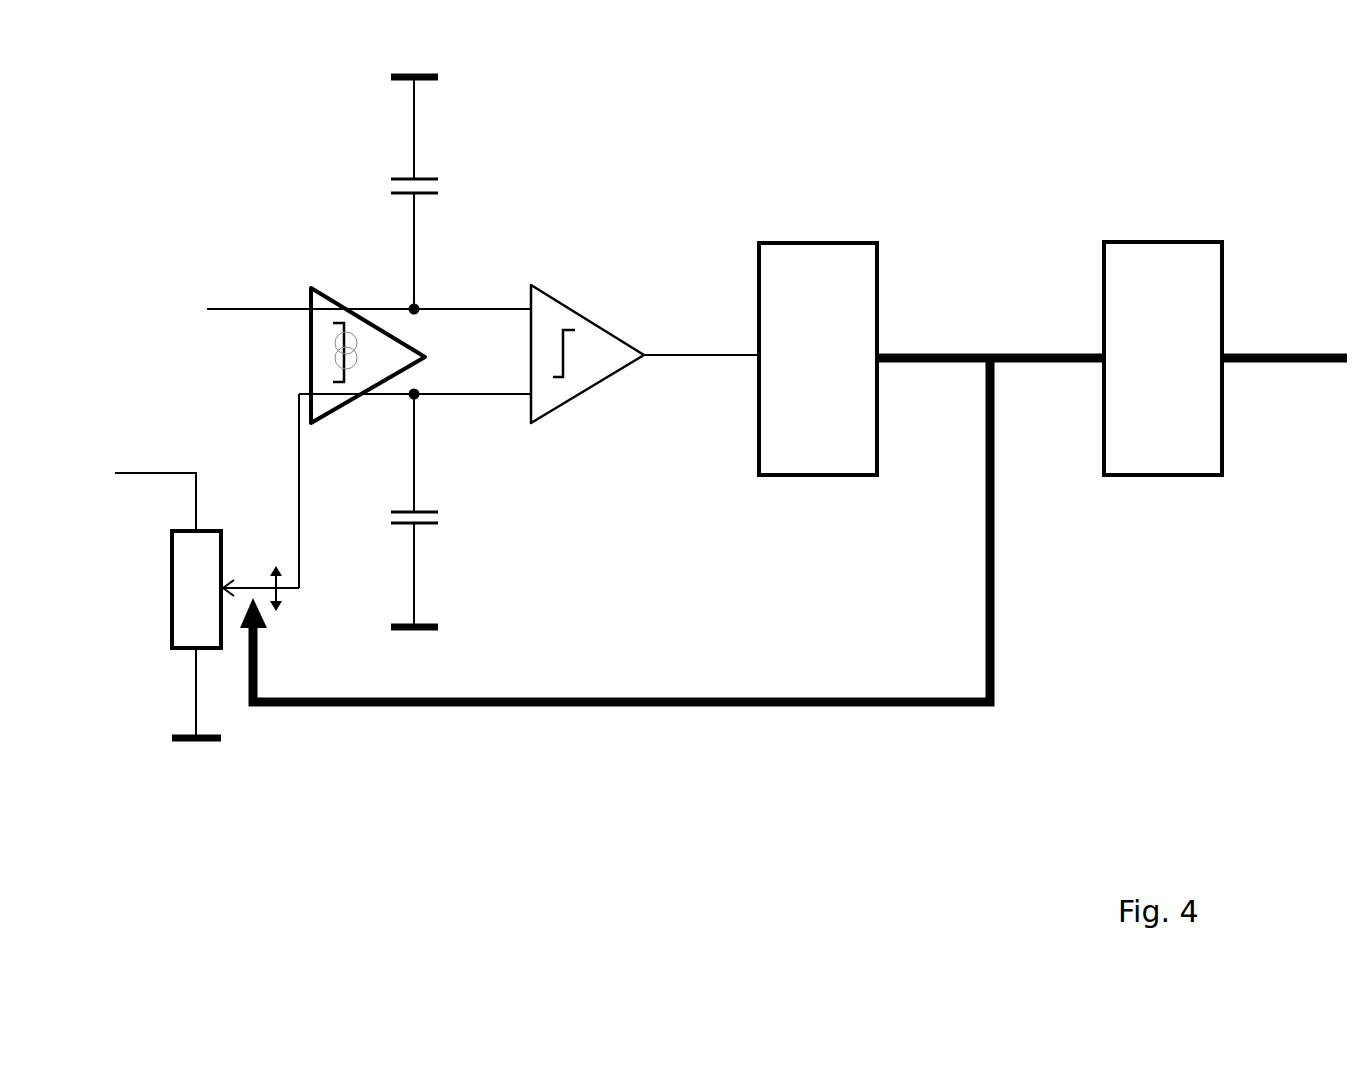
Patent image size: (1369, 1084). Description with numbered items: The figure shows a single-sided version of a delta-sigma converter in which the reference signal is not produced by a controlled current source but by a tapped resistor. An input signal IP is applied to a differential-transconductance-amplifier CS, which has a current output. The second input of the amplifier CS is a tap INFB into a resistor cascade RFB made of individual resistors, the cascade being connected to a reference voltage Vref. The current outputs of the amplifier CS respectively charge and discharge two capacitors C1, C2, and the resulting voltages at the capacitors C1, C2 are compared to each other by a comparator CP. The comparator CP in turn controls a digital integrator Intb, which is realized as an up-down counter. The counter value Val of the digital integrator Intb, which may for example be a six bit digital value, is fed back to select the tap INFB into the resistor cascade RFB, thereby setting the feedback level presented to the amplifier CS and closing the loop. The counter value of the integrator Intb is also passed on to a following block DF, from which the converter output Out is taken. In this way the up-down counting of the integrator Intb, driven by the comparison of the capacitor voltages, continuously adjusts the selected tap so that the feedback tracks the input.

The input signal IP is at (228, 302).
The differential-transconductance-amplifier CS is at (368, 339).
The comparator CP is at (587, 337).
The capacitor C1 is at (440, 510).
The capacitor C2 is at (440, 193).
The digital integrator Intb is at (818, 359).
The digital filter DF is at (1163, 358).
The output signal Out is at (1284, 382).
The counter value Val is at (615, 560).
The reference voltage Vref is at (117, 491).
The resistor cascade RFB is at (197, 634).
The tap INFB is at (343, 491).